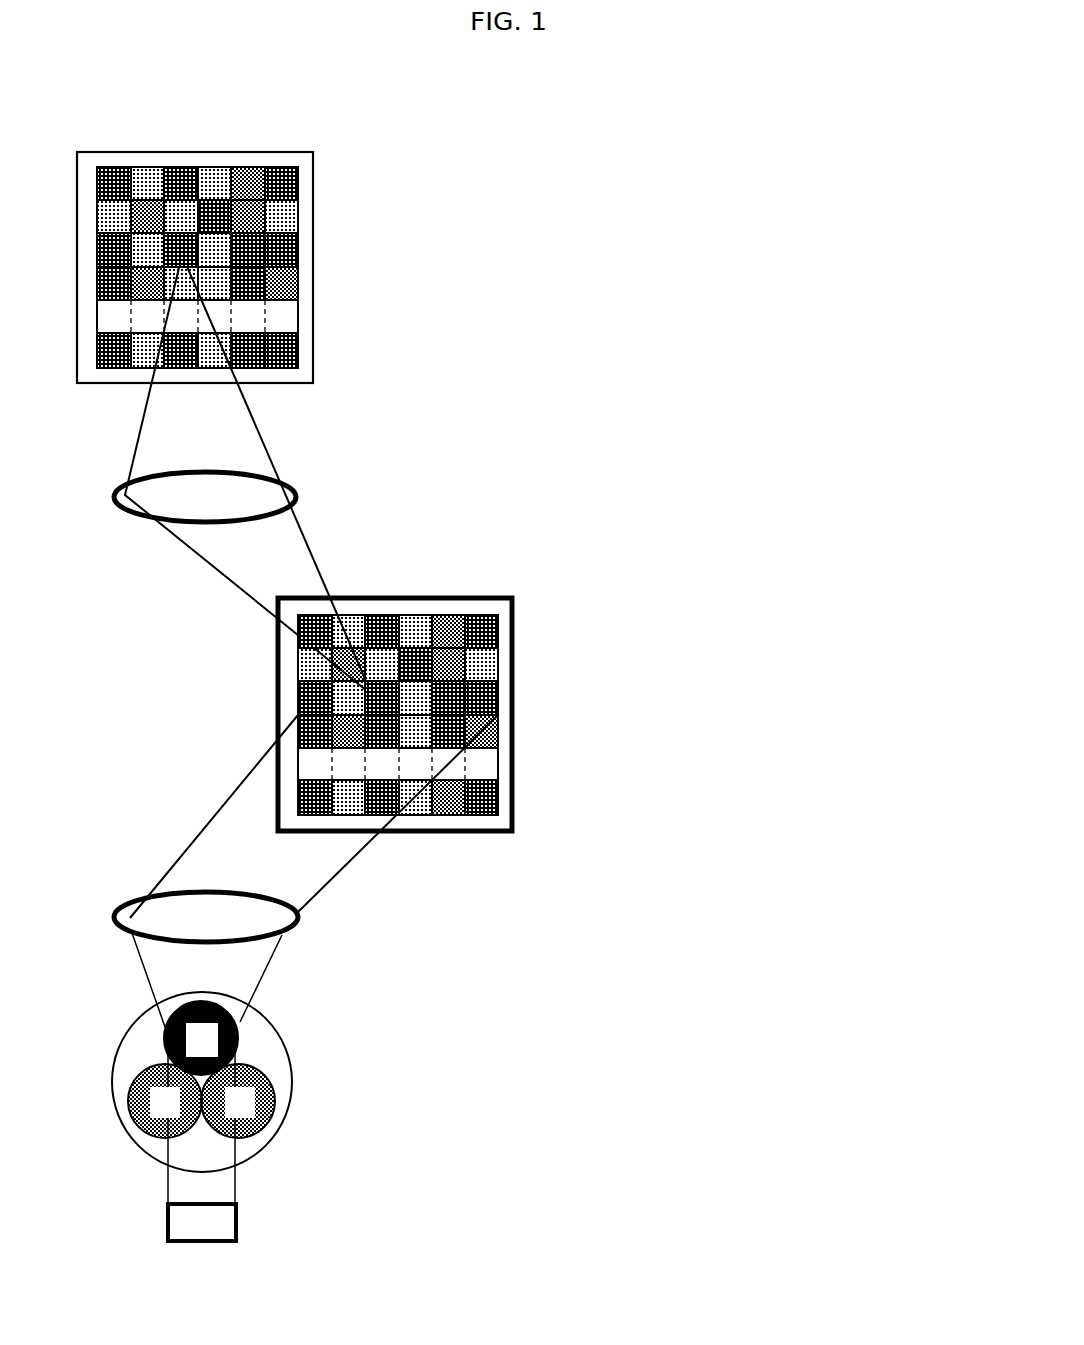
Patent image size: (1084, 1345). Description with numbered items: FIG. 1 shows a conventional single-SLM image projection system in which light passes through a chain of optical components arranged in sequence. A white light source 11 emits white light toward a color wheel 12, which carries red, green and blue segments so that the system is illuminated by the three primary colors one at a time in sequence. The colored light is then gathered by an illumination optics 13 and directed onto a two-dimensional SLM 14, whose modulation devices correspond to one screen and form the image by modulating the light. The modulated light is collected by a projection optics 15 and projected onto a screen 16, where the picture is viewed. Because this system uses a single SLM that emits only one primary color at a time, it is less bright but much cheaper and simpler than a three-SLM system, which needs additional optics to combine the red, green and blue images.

The white light source 11 is at (237, 1222).
The color wheel 12 is at (292, 1082).
The illumination optics 13 is at (300, 917).
The two-dimensional (2D) SLM 14 is at (513, 712).
The projection optics 15 is at (300, 497).
The screen 16 is at (318, 263).